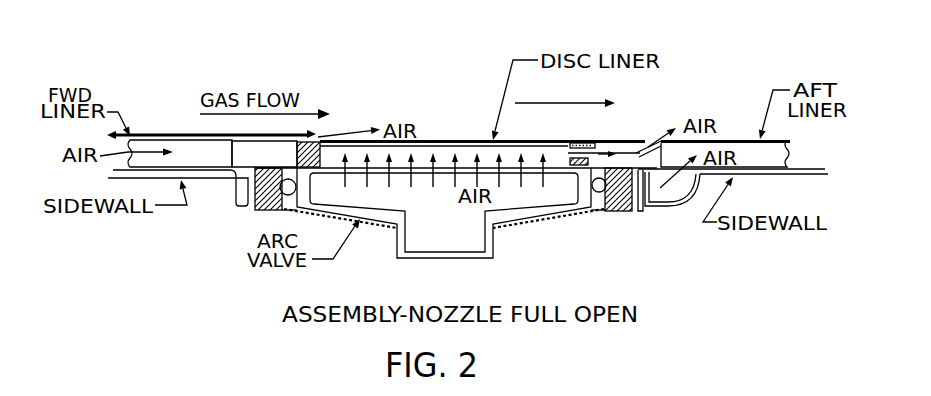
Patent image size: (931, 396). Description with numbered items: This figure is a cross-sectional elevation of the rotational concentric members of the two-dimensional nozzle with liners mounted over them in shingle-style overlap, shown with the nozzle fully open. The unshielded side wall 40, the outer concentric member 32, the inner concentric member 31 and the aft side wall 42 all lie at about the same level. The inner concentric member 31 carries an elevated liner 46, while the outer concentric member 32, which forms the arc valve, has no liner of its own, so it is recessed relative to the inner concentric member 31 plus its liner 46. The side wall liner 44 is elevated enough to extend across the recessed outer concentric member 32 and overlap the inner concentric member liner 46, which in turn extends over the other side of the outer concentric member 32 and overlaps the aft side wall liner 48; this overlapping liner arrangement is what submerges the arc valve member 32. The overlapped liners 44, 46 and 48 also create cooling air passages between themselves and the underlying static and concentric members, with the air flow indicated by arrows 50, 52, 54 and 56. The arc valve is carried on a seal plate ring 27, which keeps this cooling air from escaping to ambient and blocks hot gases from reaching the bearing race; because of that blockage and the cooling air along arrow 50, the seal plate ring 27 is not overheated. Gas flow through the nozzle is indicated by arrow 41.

The side wall liner 44 is at (138, 136).
The cooling air arrow 50 is at (172, 152).
The seal plate ring 27 is at (253, 168).
The side wall 40 is at (208, 178).
The outer concentric member 32 is at (257, 210).
The cooling air arrow 52 is at (342, 141).
The inner concentric member liner 46 is at (452, 142).
The inner concentric member 31 is at (414, 173).
The gas flow exit 41 is at (621, 138).
The cooling air arrow 54 is at (603, 145).
The cooling air arrow 56 is at (658, 140).
The aft side wall liner 48 is at (747, 139).
The side wall 42 is at (790, 176).